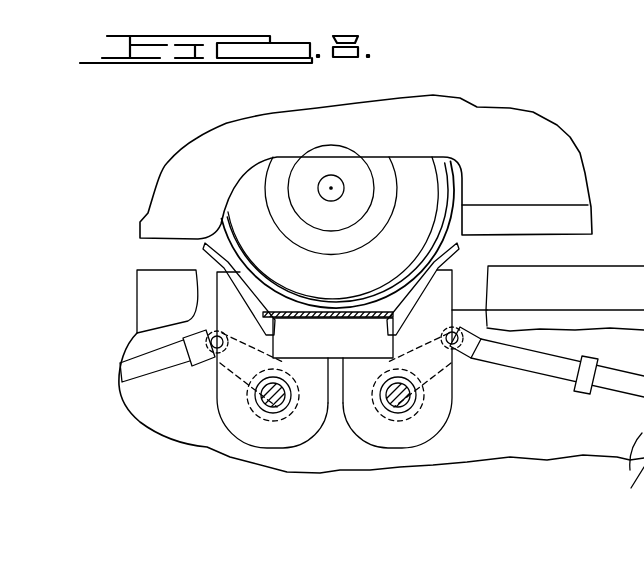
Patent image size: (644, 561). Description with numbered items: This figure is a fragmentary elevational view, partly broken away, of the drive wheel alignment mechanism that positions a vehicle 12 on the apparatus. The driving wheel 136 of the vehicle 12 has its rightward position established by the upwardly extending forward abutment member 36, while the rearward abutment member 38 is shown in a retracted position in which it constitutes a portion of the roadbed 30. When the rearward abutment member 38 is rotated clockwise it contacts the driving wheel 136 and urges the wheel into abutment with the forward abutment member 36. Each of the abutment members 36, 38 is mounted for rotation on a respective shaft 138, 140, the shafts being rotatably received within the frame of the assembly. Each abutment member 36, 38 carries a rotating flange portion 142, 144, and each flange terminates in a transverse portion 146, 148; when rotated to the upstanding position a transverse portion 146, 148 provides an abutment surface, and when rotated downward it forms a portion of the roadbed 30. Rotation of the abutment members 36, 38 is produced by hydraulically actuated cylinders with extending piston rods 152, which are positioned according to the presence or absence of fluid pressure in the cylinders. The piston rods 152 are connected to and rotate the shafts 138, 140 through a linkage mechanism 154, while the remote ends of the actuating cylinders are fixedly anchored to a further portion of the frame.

The vehicle 12 is at (527, 122).
The roadbed 30 is at (333, 320).
The forward abutment member 36 is at (462, 243).
The rearward abutment member 38 is at (203, 248).
The driving wheel 136 is at (386, 272).
The shaft 138 is at (412, 407).
The shaft 140 is at (263, 408).
The rotating flange portion 142 is at (438, 437).
The rotating flange portion 144 is at (250, 444).
The transverse portion 146 is at (420, 294).
The transverse portion 148 is at (247, 287).
The piston rod 152 is at (122, 373).
The linkage mechanism 154 is at (220, 392).